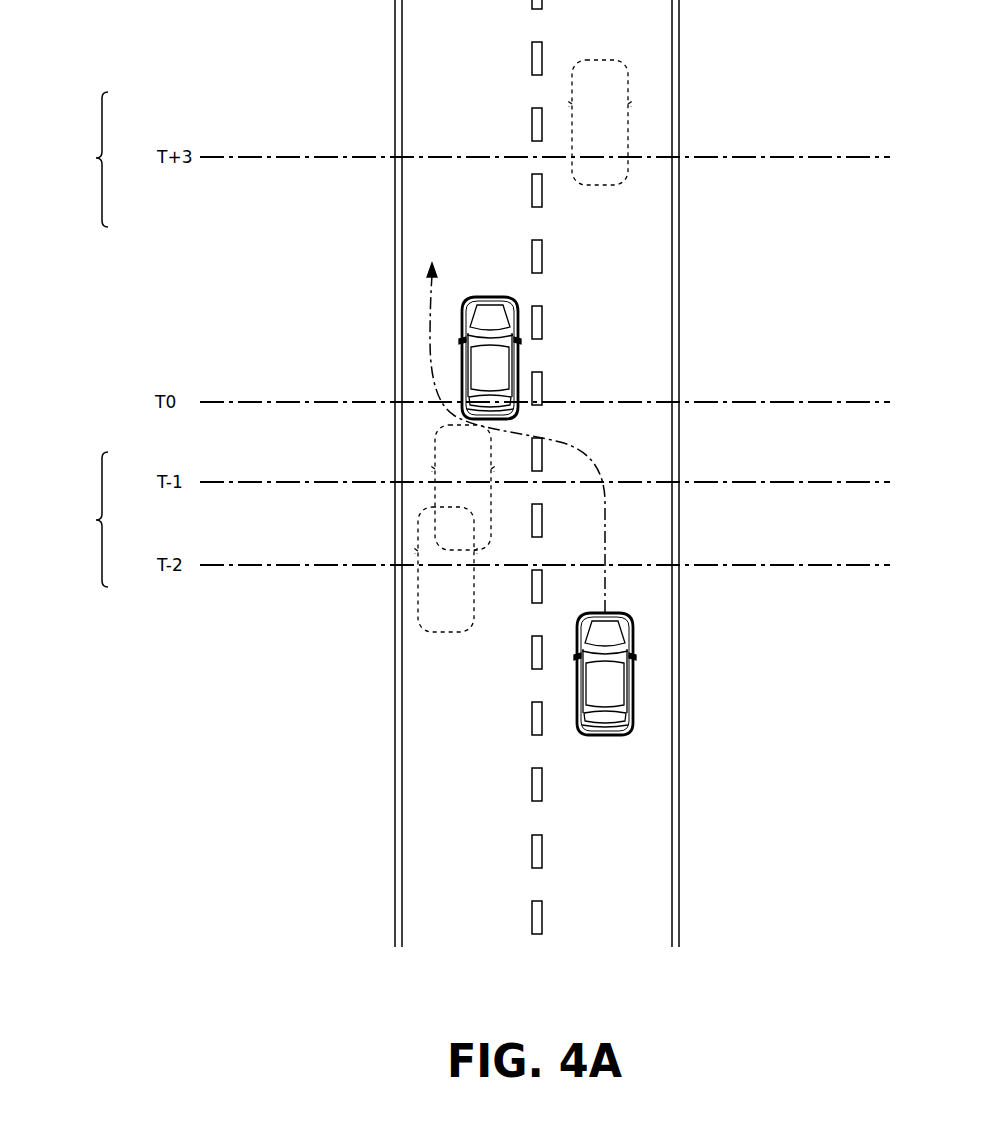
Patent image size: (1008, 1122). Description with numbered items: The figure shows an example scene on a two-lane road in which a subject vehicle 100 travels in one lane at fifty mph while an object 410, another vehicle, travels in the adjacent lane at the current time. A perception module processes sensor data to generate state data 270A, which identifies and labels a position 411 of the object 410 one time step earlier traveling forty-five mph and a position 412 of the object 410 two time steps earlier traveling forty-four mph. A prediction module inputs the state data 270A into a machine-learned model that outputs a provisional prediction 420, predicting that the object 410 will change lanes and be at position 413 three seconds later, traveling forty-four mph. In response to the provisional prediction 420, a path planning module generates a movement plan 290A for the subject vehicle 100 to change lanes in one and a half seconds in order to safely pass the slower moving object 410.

The subject vehicle 100 is at (632, 708).
The object 410 is at (518, 358).
The position 411 is at (493, 493).
The position 412 is at (418, 600).
The position 413 is at (600, 122).
The movement plan 290A is at (568, 442).
The provisional prediction 420 is at (79, 159).
The state data 270A is at (71, 519).